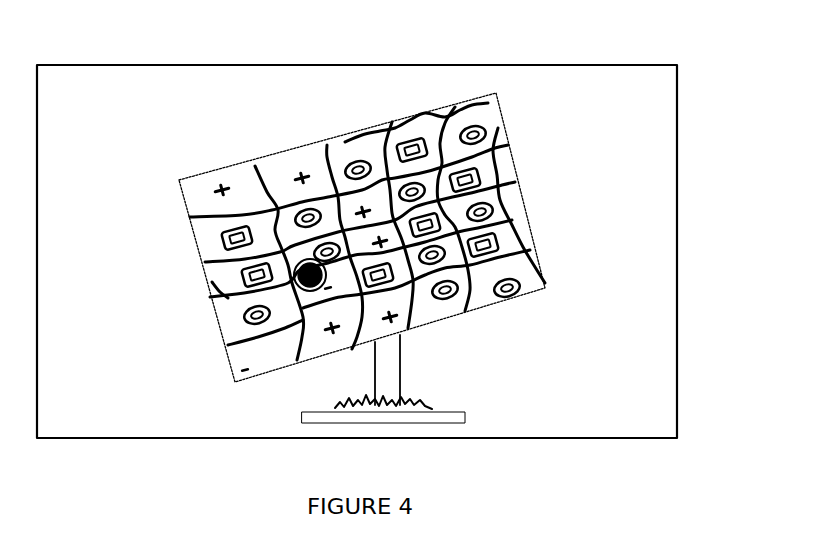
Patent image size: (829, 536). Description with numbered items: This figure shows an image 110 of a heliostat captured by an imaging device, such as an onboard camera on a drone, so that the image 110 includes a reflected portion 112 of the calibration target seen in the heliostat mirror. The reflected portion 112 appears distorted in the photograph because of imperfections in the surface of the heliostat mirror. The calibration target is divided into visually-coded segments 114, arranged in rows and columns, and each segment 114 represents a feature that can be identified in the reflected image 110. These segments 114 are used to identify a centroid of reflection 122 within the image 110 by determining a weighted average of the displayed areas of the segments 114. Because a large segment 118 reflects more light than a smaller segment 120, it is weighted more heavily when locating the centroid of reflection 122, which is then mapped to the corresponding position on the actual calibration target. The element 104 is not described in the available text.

The image 110 is at (618, 65).
The textured panel 104 is at (433, 110).
The reflected portion 112 is at (240, 177).
The segments 114 is at (502, 238).
The large segment 118 is at (230, 317).
The smaller segment 120 is at (398, 190).
The centroid of reflection 122 is at (297, 263).